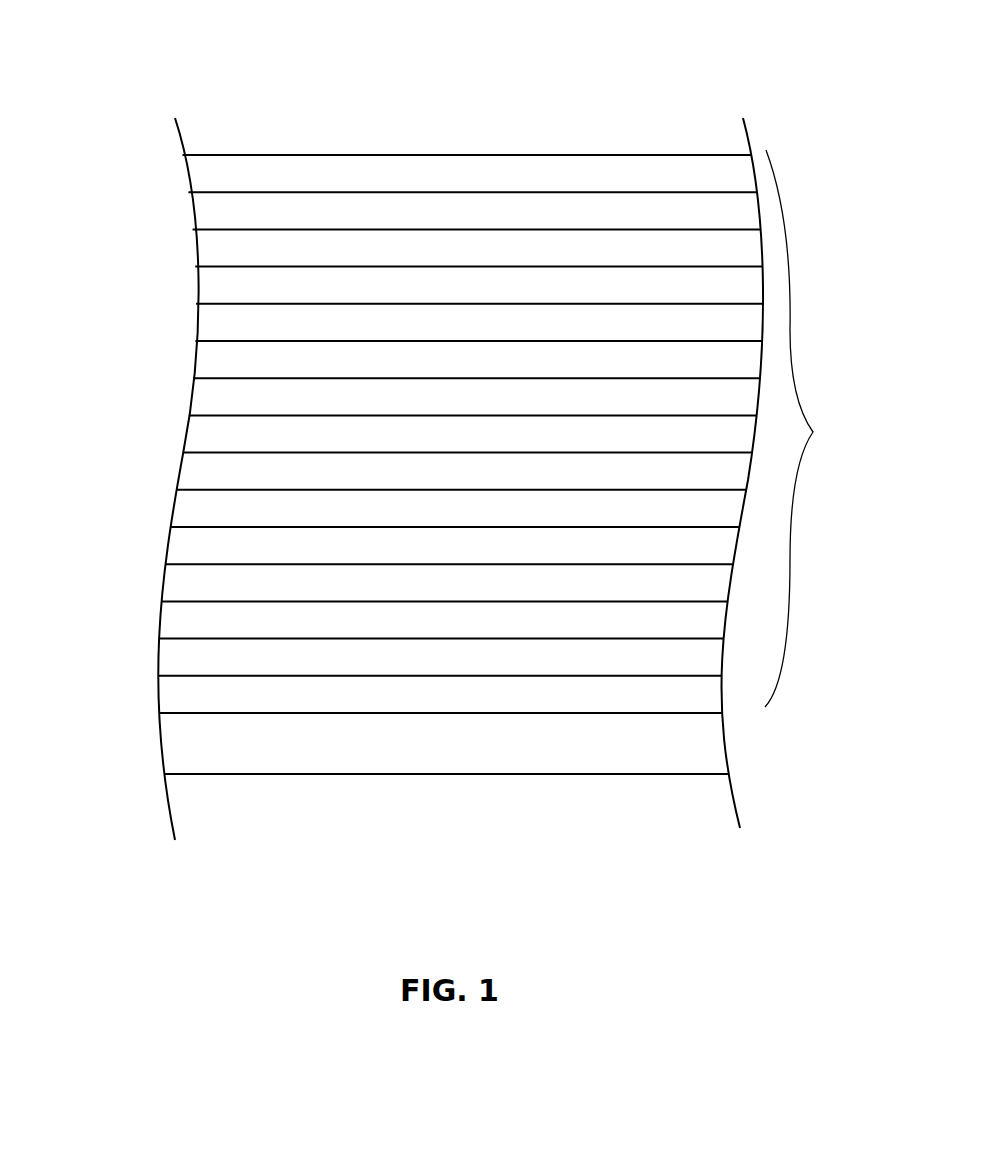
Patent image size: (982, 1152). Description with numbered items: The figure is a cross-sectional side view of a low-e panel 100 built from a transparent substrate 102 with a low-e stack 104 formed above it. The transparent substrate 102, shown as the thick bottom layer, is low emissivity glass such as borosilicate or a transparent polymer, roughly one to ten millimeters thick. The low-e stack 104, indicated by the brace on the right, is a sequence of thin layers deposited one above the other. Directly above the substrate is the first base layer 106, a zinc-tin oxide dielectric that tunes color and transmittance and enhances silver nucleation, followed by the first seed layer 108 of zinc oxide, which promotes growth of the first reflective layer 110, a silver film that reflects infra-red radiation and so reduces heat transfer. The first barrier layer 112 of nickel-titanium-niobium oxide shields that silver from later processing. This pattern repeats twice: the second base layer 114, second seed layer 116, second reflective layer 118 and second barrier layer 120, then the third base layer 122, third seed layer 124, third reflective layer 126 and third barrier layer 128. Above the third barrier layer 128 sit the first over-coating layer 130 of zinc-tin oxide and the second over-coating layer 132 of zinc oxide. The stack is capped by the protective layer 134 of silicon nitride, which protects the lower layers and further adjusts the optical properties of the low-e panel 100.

The low-e panel 100 is at (281, 110).
The transparent substrate 102 is at (421, 753).
The low-e stack 104 is at (816, 428).
The first base layer 106 is at (175, 694).
The first seed layer 108 is at (175, 654).
The first reflective layer 110 is at (175, 619).
The first barrier layer 112 is at (180, 583).
The second base layer 114 is at (187, 548).
The second seed layer 116 is at (197, 508).
The second reflective layer 118 is at (202, 470).
The second barrier layer 120 is at (209, 437).
The third base layer 122 is at (215, 394).
The third seed layer 124 is at (215, 360).
The third reflective layer 126 is at (213, 325).
The third barrier layer 128 is at (220, 287).
The first over-coating layer 130 is at (213, 248).
The second over-coating layer 132 is at (207, 208).
The protective layer 134 is at (398, 170).